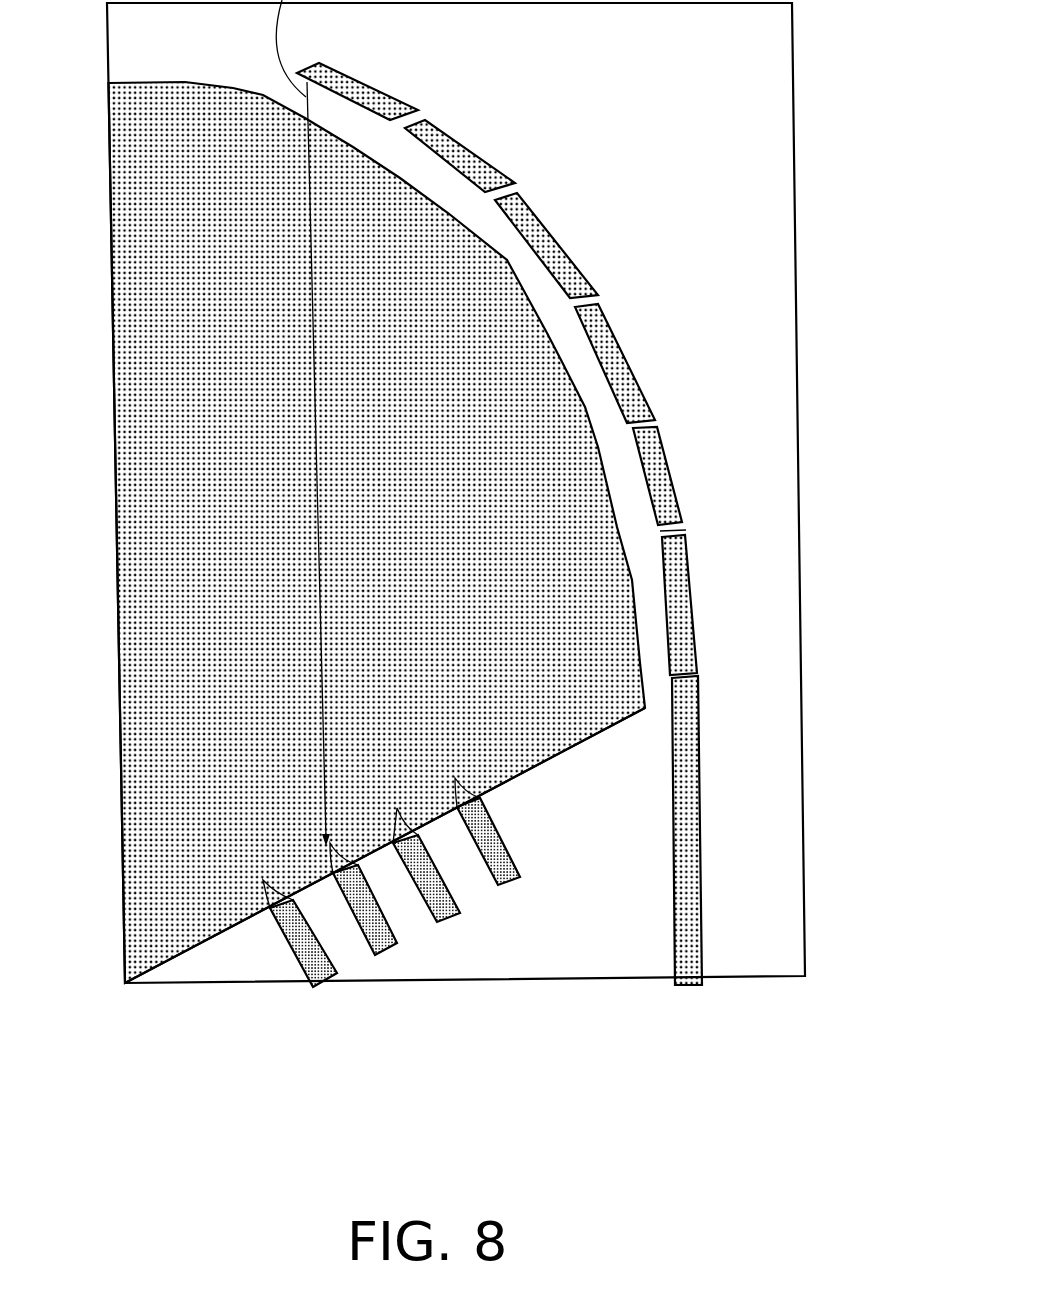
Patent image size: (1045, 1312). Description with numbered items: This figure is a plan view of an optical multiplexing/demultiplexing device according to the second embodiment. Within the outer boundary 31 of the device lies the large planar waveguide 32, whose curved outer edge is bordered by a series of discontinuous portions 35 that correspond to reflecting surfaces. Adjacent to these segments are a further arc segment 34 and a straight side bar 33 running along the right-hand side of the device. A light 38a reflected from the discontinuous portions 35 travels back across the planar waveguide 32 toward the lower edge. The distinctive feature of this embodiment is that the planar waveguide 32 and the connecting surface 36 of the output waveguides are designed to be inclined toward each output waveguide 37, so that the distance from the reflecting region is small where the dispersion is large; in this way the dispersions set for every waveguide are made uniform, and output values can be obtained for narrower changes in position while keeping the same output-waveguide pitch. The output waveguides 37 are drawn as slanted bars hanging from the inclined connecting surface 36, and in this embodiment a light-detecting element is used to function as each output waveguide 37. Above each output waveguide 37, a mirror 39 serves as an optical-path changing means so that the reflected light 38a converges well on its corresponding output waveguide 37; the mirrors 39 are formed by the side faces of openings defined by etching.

The housing frame 31 is at (755, 60).
The planar waveguide 32 is at (143, 443).
The side bar 33 is at (688, 988).
The arc segment 34 is at (692, 630).
The discontinuous portions 35 is at (340, 840).
The connecting surface 36 is at (140, 982).
The output waveguide 37 is at (302, 982).
The light 38a is at (687, 572).
The mirror 39 is at (263, 883).